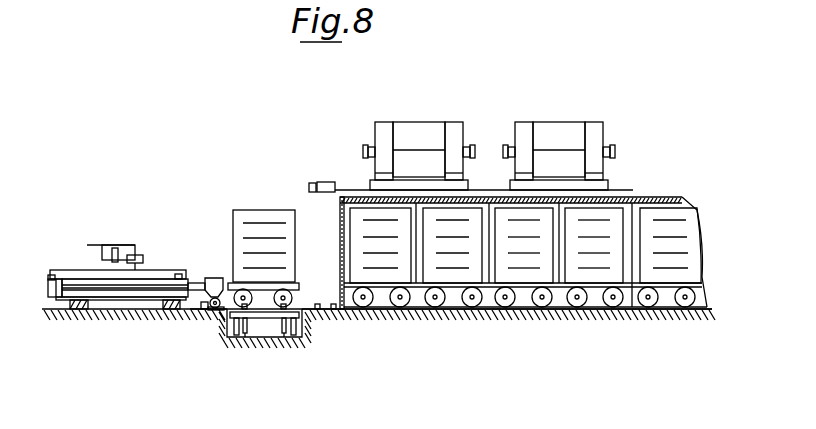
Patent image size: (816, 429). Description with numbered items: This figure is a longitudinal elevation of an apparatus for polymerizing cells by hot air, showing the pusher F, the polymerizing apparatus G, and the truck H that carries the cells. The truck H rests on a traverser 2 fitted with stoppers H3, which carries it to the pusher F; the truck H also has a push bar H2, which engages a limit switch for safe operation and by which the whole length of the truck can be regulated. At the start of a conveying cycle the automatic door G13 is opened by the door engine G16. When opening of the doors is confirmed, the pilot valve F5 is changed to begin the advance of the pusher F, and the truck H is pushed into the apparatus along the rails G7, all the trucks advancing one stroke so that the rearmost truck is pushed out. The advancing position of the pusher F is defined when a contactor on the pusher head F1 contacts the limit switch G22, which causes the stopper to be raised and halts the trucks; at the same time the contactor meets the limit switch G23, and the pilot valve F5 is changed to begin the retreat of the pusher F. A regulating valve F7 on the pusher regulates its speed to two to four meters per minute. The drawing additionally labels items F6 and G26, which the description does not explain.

The pusher F is at (127, 298).
The pusher head F1 is at (213, 282).
The pilot valve F5 is at (142, 255).
The contact F6 is at (118, 248).
The regulating valve F7 is at (52, 275).
The kiln car train G is at (620, 193).
The rails G7 is at (220, 311).
The automatic door G13 is at (340, 250).
The door engine G16 is at (328, 182).
The limit switch G22 is at (322, 311).
The limit switch G23 is at (344, 311).
The buffer G26 is at (204, 309).
The truck H is at (547, 283).
The push bar H2 is at (297, 287).
The stoppers H3 is at (246, 322).
The traverser 2 is at (267, 318).